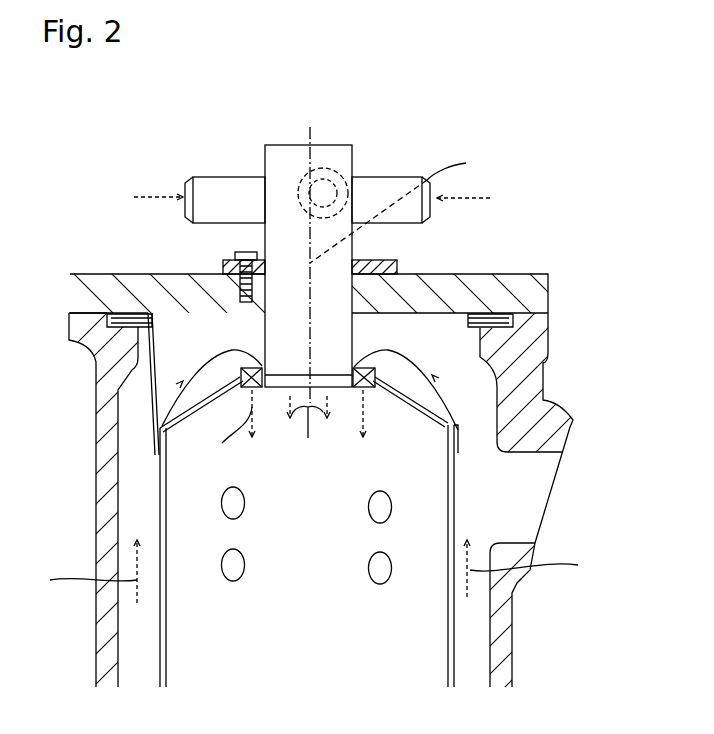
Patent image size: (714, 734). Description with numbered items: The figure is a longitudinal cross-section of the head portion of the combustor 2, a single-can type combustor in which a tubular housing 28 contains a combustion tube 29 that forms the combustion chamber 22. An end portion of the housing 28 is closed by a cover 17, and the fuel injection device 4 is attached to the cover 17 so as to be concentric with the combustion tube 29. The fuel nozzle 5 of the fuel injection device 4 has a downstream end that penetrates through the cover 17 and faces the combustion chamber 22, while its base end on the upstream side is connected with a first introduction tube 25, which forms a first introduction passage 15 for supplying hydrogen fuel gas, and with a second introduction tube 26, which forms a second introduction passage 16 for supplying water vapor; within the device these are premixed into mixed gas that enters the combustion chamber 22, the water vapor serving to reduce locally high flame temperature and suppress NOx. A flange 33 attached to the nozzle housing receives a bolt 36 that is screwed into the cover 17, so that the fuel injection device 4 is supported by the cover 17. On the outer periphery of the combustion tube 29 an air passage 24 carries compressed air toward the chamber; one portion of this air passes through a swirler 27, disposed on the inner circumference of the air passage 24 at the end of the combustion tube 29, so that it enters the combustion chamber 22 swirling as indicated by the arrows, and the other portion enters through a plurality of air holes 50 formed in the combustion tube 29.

The combustor 2 is at (103, 488).
The fuel injection device 4 is at (271, 241).
The fuel nozzle 5 is at (352, 146).
The first introduction passage 15 is at (235, 192).
The second introduction passage 16 is at (290, 147).
The cover 17 is at (517, 275).
The combustion chamber 22 is at (327, 538).
The air passage 24 is at (138, 633).
The first introduction tube 25 is at (208, 182).
The second introduction tube 26 is at (322, 180).
The swirler 27 is at (367, 390).
The housing 28 is at (502, 620).
The combustion tube 29 is at (450, 650).
The flange 33 is at (387, 262).
The bolt 36 is at (235, 250).
The air holes 50 is at (237, 567).